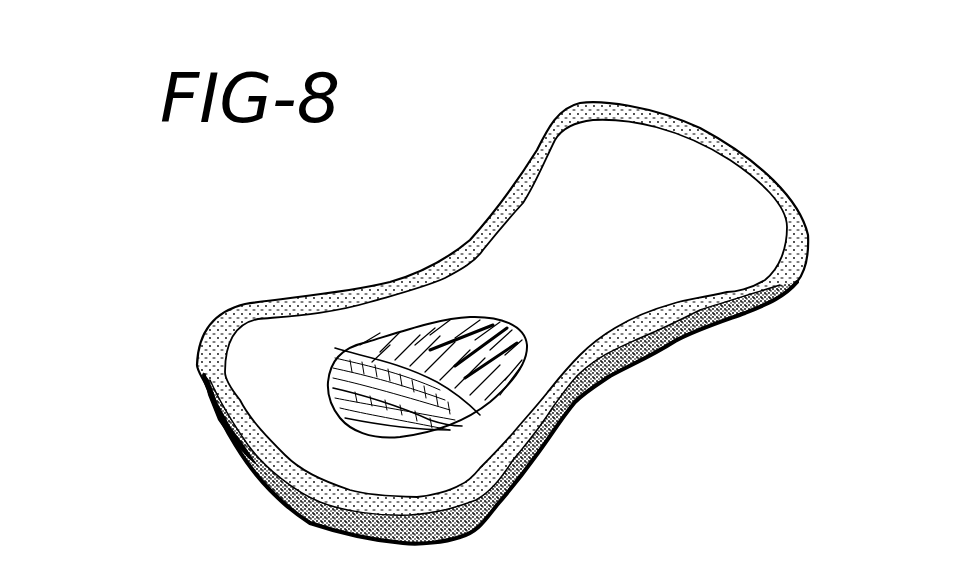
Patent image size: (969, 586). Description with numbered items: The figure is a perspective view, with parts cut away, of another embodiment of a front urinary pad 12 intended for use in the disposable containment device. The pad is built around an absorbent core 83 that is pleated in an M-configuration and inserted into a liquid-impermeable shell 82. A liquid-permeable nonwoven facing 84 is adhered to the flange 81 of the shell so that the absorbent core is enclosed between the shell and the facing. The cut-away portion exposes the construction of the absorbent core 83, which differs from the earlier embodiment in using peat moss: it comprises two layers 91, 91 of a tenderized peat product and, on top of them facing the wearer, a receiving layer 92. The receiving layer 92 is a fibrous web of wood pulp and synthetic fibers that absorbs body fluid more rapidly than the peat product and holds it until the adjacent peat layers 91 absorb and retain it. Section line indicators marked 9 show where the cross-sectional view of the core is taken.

The front urinary pad 12 is at (136, 208).
The flange 81 is at (640, 113).
The liquid-impermeable shell 82 is at (547, 443).
The absorbent core 83 is at (386, 357).
The liquid-permeable nonwoven facing 84 is at (737, 198).
The layers of tenderized peat product 91 is at (353, 418).
The receiving layer 92 is at (327, 382).
The section line 9- 9 is at (420, 222).